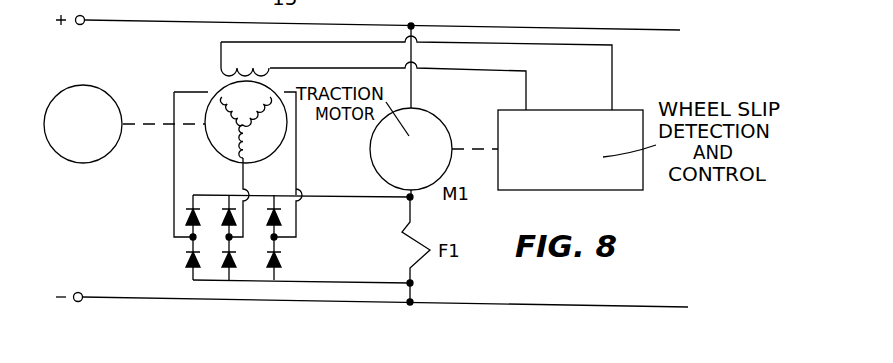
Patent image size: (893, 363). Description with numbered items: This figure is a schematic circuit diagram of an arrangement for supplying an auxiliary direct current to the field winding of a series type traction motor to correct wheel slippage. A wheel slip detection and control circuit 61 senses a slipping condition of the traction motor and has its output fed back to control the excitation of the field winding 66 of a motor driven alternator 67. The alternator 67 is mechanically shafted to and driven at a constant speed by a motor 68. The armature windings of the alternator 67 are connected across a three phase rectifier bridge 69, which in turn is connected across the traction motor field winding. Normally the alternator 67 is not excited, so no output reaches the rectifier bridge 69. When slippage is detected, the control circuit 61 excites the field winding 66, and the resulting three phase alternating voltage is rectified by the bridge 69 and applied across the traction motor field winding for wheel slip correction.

The wheel slip detection and control circuit 61 is at (624, 109).
The field winding 66 is at (263, 68).
The motor driven alternator 67 is at (279, 138).
The motor 68 is at (93, 91).
The three phase rectifier bridge 69 is at (266, 263).